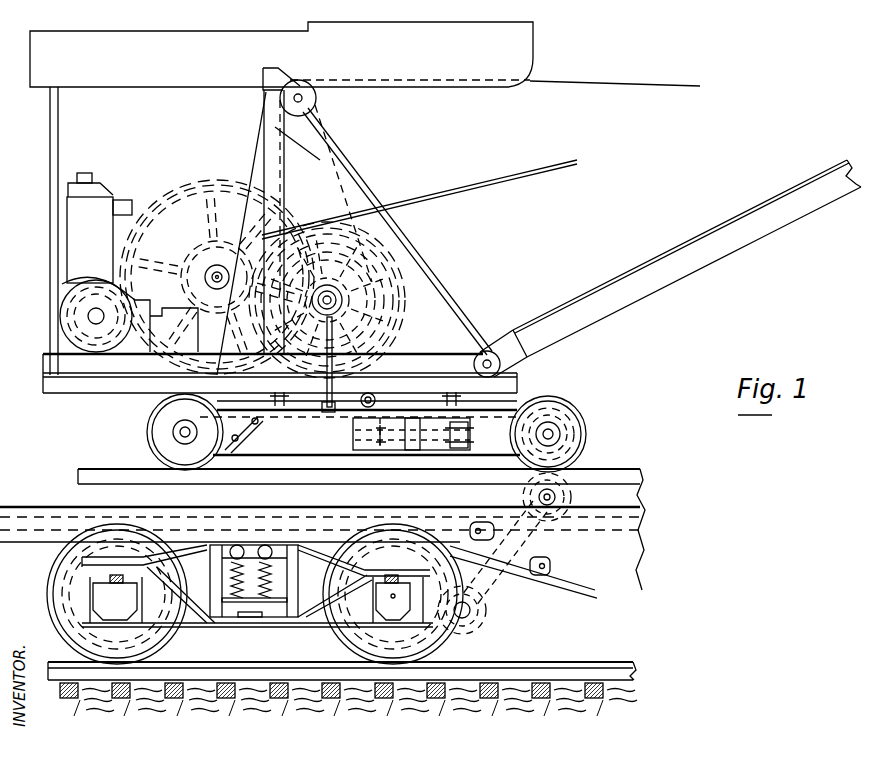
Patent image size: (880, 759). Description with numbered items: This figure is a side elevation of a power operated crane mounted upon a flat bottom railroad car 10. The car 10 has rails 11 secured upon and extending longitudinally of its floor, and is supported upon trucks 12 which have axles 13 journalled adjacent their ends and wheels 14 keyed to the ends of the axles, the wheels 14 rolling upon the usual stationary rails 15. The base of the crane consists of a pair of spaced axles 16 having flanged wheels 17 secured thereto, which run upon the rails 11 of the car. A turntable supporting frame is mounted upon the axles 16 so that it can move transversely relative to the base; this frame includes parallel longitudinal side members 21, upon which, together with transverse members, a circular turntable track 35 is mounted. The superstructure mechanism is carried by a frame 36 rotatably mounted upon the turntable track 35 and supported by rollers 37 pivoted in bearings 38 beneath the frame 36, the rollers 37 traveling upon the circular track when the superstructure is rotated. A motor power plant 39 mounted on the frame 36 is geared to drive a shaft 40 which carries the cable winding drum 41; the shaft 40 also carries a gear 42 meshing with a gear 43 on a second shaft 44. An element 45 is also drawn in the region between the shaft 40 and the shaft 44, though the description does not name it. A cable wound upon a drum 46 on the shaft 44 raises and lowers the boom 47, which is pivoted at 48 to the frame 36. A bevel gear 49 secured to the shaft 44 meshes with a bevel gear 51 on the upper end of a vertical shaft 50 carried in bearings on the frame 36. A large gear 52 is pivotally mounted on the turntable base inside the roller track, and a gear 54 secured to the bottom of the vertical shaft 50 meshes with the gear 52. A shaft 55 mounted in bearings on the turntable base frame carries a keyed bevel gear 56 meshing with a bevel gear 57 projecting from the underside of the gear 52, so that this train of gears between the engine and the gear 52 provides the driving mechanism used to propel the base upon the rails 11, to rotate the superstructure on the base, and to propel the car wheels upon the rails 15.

The flat bottom railroad car 10 is at (322, 551).
The rails 11 is at (80, 474).
The trucks 12 is at (260, 623).
The axles 13 is at (115, 583).
The wheels 14 is at (455, 657).
The stationary rails 15 is at (547, 673).
The axles 16 is at (175, 437).
The flanged wheels 17 is at (148, 427).
The longitudinal side members 21 is at (366, 439).
The circular turntable track 35 is at (270, 409).
The frame 36 is at (512, 388).
The rollers 37 is at (278, 405).
The bearings 38 is at (273, 401).
The motor power plant 39 is at (129, 262).
The shaft 40 is at (216, 279).
The cable winding drum 41 is at (172, 210).
The gear 42 is at (212, 240).
The gear 43 is at (400, 258).
The shaft 44 is at (338, 298).
The belt 45 is at (295, 190).
The drum 46 is at (328, 266).
The boom 47 is at (673, 255).
The pivot 48 is at (490, 357).
The bevel gear 49 is at (340, 292).
The vertical shaft 50 is at (348, 345).
The bevel gear 51 is at (345, 313).
The large gear 52 is at (400, 402).
The gear 54 is at (330, 408).
The shaft 55 is at (443, 438).
The bevel gear 56 is at (398, 452).
The bevel gear 57 is at (380, 438).